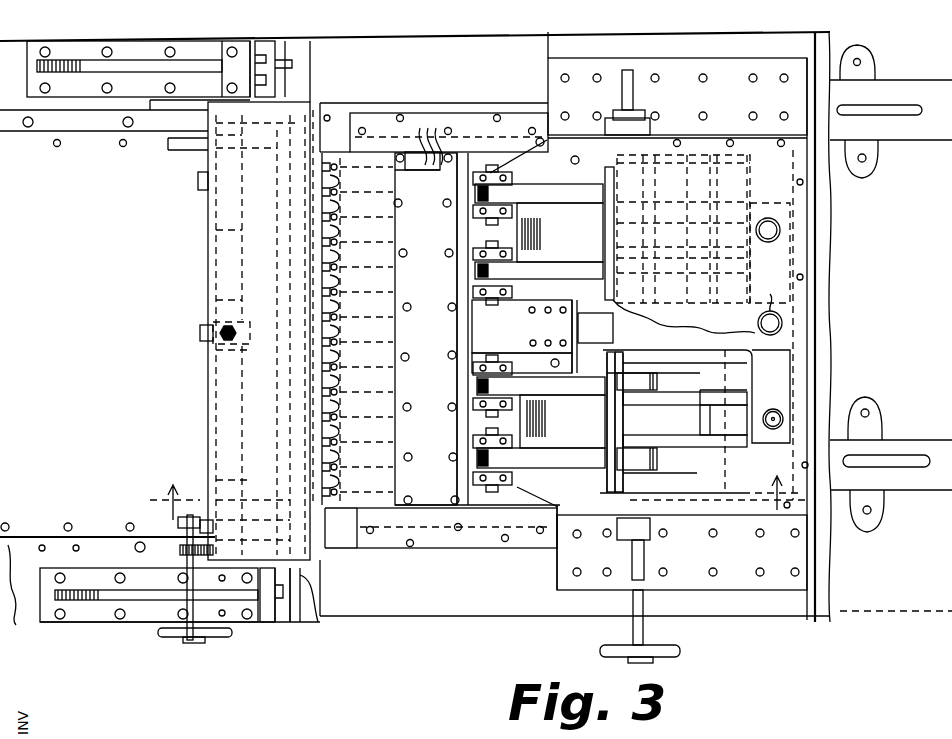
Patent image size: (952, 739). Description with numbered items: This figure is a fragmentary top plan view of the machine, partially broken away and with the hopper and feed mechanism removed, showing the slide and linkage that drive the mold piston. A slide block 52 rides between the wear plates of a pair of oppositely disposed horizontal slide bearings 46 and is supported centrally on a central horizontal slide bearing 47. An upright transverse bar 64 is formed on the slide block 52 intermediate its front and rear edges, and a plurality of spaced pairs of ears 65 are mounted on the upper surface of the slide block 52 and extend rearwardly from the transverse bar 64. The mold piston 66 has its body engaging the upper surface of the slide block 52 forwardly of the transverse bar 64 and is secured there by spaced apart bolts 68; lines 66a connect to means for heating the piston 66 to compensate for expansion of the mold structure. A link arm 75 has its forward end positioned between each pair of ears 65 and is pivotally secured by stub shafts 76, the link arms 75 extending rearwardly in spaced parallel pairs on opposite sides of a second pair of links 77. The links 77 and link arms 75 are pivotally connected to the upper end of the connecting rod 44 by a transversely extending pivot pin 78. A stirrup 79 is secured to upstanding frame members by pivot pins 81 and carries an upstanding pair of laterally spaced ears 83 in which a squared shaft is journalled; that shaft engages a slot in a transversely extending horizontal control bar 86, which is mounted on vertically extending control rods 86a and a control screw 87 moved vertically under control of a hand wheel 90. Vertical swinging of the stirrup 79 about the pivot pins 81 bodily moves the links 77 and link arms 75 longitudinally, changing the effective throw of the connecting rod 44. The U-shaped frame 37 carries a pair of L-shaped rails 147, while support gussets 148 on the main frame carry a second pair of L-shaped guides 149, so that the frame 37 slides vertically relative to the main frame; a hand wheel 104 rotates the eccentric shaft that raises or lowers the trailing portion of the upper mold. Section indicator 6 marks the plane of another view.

The U-shaped frame 37 is at (226, 404).
The connecting rod 44 is at (582, 215).
The horizontal slide bearings 46 is at (458, 116).
The central horizontal slide bearing 47 is at (542, 336).
The slide block 52 is at (490, 252).
The upright transverse bar 64 is at (462, 237).
The ears 65 is at (480, 178).
The mold piston 66 is at (430, 493).
The lines 66a is at (420, 132).
The bolts 68 is at (443, 224).
The link arms 75 is at (558, 194).
The stub shafts 76 is at (488, 178).
The links 77 is at (683, 392).
The pivot pin 78 is at (655, 420).
The stirrup 79 is at (717, 364).
The pivot pins 81 is at (636, 108).
The ears 83 is at (792, 396).
The control bar 86 is at (782, 410).
The control rods 86a is at (768, 242).
The control screw 87 is at (782, 420).
The hand wheel 90 is at (680, 652).
The hand wheel 104 is at (220, 636).
The L-shaped rails 147 is at (268, 46).
The support gussets 148 is at (222, 54).
The L-shaped guides 149 is at (263, 66).
The section line 6 is at (475, 500).